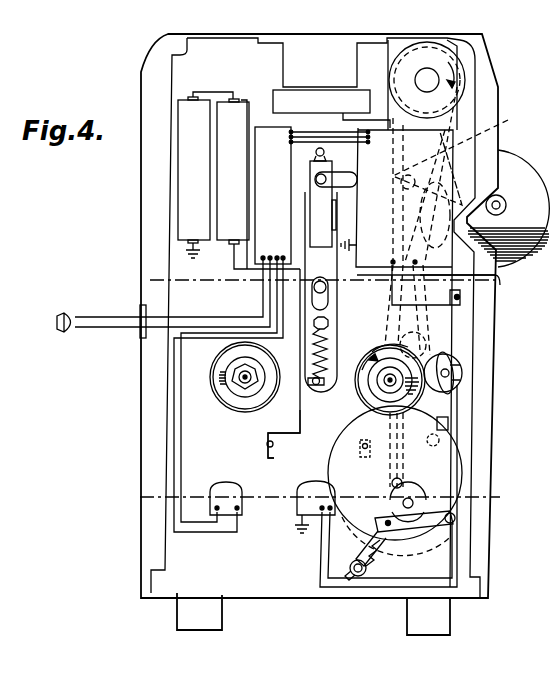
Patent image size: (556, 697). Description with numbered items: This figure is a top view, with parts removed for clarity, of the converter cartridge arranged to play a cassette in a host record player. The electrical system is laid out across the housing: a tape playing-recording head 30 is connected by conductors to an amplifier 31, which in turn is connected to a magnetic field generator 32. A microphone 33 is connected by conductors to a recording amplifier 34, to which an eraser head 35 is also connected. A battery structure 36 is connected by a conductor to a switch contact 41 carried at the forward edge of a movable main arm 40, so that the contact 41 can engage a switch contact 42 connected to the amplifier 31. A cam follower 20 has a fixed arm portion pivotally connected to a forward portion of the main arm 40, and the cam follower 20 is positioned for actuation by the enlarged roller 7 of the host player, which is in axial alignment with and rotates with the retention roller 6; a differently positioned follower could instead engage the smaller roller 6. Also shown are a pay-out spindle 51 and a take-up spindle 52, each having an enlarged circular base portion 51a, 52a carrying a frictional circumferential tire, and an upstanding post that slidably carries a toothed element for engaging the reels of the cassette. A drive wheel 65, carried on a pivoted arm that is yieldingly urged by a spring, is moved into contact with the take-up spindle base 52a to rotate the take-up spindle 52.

The retention roller 6 is at (505, 197).
The larger roller 7 is at (526, 150).
The cam follower 20 is at (463, 156).
The tape playing-recording head 30 is at (298, 491).
The amplifier 31 is at (497, 274).
The magnetic field generator 32 is at (340, 72).
The microphone 33 is at (81, 291).
The recording amplifier 34 is at (267, 130).
The eraser head 35 is at (222, 482).
The battery structure 36 is at (188, 185).
The main arm 40 is at (327, 265).
The switch contact 41 is at (327, 166).
The switch contact 42 is at (316, 155).
The pay-out spindle 51 is at (231, 397).
The enlarged circular base portion 51a is at (258, 405).
The take-up spindle 52 is at (373, 403).
The enlarged circular base portion 52a is at (388, 347).
The drive wheel 65 is at (462, 355).